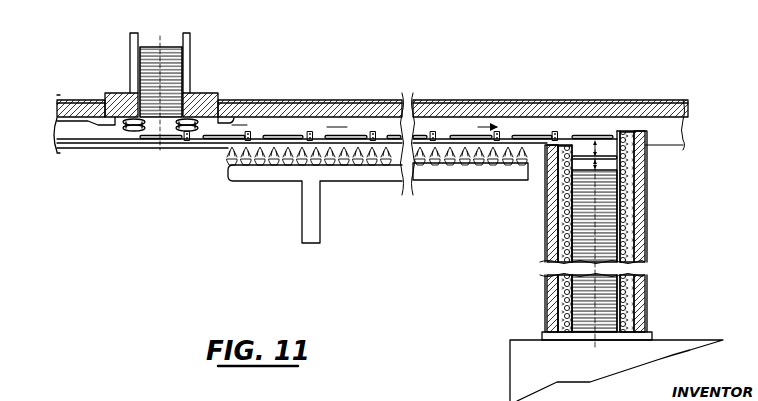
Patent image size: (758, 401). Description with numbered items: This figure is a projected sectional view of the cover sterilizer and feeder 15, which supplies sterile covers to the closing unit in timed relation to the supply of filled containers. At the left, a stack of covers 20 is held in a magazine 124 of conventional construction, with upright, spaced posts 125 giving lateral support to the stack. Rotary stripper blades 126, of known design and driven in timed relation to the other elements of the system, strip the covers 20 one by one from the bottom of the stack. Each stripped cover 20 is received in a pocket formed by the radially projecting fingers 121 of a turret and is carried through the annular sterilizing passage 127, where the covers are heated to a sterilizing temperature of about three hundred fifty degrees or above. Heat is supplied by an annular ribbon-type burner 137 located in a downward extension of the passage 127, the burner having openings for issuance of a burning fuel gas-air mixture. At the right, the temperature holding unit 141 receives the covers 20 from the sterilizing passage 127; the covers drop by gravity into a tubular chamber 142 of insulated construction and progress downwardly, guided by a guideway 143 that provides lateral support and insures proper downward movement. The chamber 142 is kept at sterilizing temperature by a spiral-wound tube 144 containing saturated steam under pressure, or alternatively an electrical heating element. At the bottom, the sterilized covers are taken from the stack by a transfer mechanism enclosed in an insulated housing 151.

The cover sterilizer and feeder 15 is at (488, 92).
The covers 20 is at (168, 46).
The radially projecting fingers 121 is at (310, 131).
The magazine 124 is at (206, 92).
The upright spaced posts 125 is at (190, 54).
The rotary stripper blades 126 is at (133, 131).
The annular sterilizing passage 127 is at (600, 118).
The annular ribbon-type burner 137 is at (363, 181).
The holding unit 141 is at (651, 232).
The tubular chamber 142 is at (618, 165).
The guideway 143 is at (618, 204).
The spiral-wound tube 144 is at (622, 253).
The insulated housing 151 is at (692, 341).